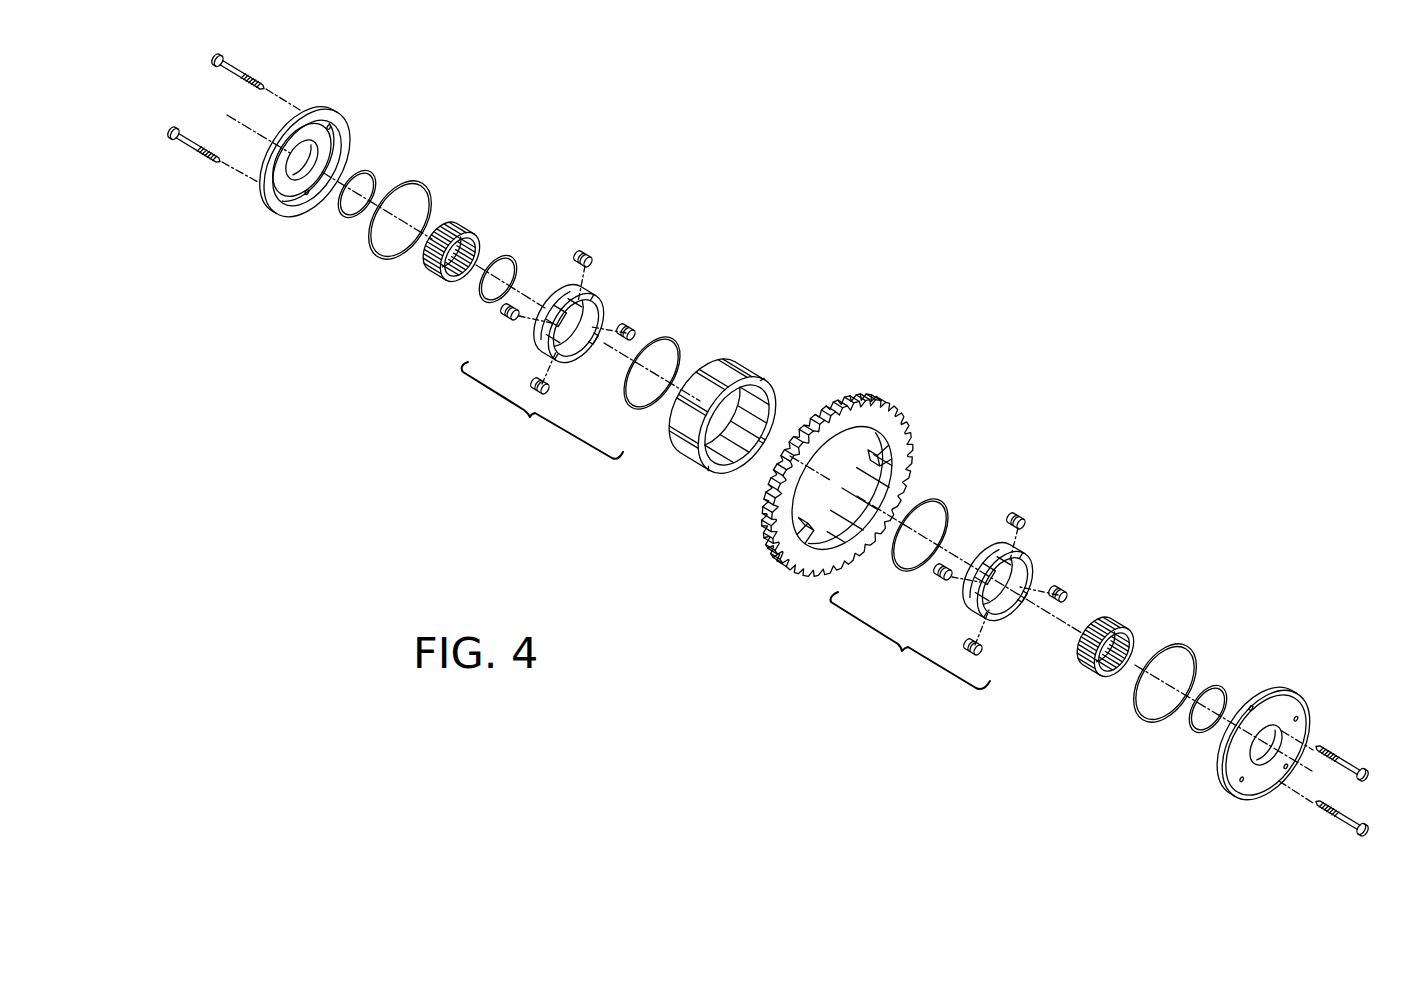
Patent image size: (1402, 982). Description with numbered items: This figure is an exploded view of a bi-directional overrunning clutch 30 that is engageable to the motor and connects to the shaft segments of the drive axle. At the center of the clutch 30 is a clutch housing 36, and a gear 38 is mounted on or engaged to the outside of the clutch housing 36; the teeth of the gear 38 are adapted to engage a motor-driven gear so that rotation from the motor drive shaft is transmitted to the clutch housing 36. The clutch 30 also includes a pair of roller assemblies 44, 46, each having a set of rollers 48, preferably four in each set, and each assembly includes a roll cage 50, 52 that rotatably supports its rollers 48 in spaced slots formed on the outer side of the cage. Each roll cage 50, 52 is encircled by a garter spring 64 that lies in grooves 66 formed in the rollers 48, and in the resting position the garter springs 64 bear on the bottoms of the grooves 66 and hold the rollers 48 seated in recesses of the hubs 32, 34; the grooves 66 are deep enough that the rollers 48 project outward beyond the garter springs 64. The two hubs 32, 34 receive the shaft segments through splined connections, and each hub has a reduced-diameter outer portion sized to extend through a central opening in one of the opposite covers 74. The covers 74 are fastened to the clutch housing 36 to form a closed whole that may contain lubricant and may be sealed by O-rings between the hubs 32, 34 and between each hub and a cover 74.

The bi-directional overrunning clutch 30 is at (1138, 283).
The hub 32 is at (457, 227).
The hub 34 is at (1115, 623).
The clutch housing 36 is at (720, 370).
The gear 38 is at (868, 430).
The roller assembly 44 is at (542, 410).
The roller assembly 46 is at (910, 640).
The rollers 48 is at (582, 252).
The roll cage 50 is at (600, 298).
The roll cage 52 is at (1033, 557).
The garter spring 64 is at (667, 340).
The grooves 66 is at (628, 330).
The covers 74 is at (317, 110).